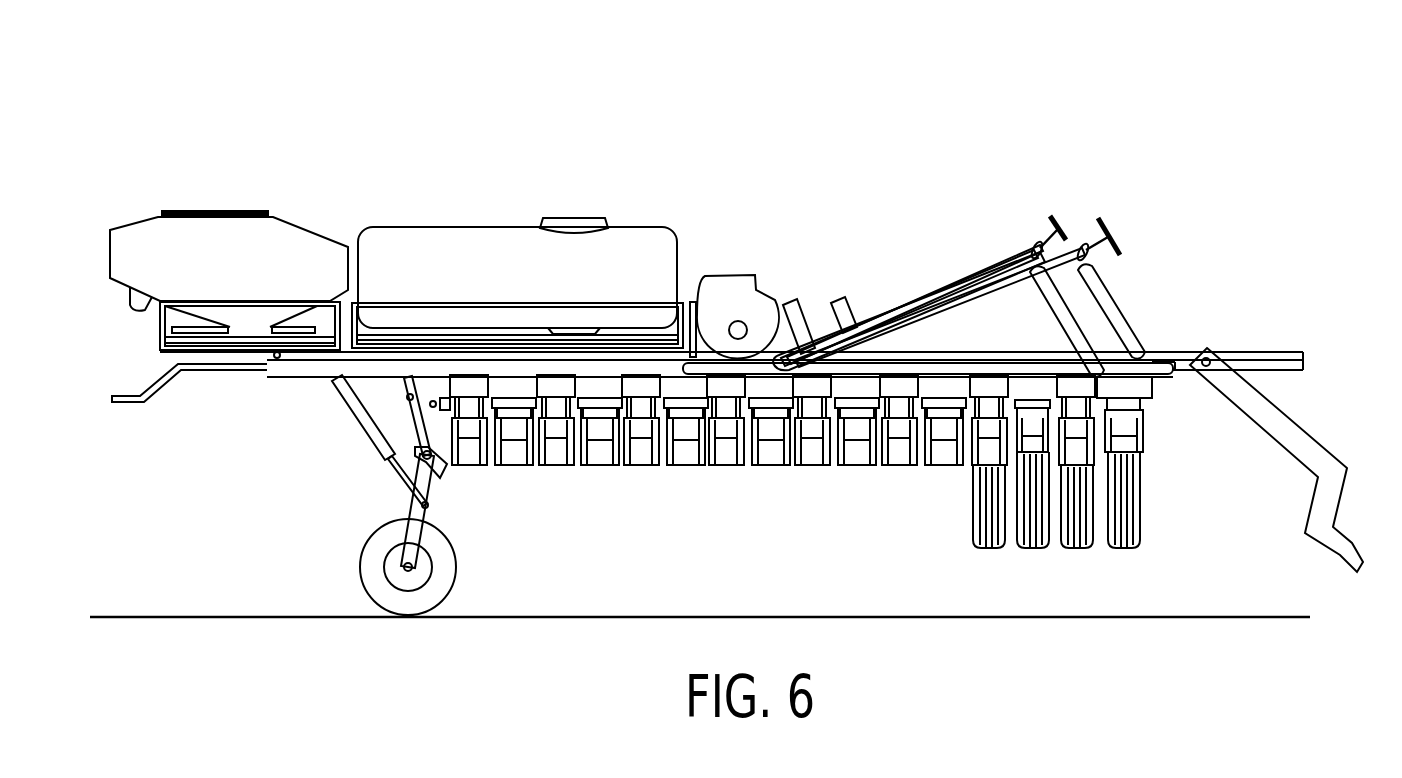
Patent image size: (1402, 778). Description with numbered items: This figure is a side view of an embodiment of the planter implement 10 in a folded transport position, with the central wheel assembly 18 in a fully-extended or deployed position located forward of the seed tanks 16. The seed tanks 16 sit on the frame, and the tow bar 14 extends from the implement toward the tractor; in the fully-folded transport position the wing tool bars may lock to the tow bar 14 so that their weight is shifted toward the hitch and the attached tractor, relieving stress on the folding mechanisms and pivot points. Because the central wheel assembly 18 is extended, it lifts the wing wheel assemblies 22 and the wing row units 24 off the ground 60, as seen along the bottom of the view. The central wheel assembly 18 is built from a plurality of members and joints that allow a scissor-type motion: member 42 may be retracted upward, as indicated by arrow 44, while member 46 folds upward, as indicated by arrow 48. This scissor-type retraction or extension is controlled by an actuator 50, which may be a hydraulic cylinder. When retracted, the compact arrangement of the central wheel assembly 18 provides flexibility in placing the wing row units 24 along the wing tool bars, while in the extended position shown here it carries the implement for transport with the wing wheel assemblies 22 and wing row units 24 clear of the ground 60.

The planter implement 10 is at (811, 128).
The tow bar 14 is at (1188, 355).
The seed tanks 16 is at (148, 235).
The central wheel assembly 18 is at (393, 560).
The wing wheel assemblies 22 is at (1084, 558).
The wing row units 24 is at (640, 477).
The member 42 is at (433, 495).
The arrow 44 is at (381, 495).
The member 46 is at (427, 432).
The arrow 48 is at (396, 412).
The actuator 50 is at (348, 412).
The ground 60 is at (265, 620).